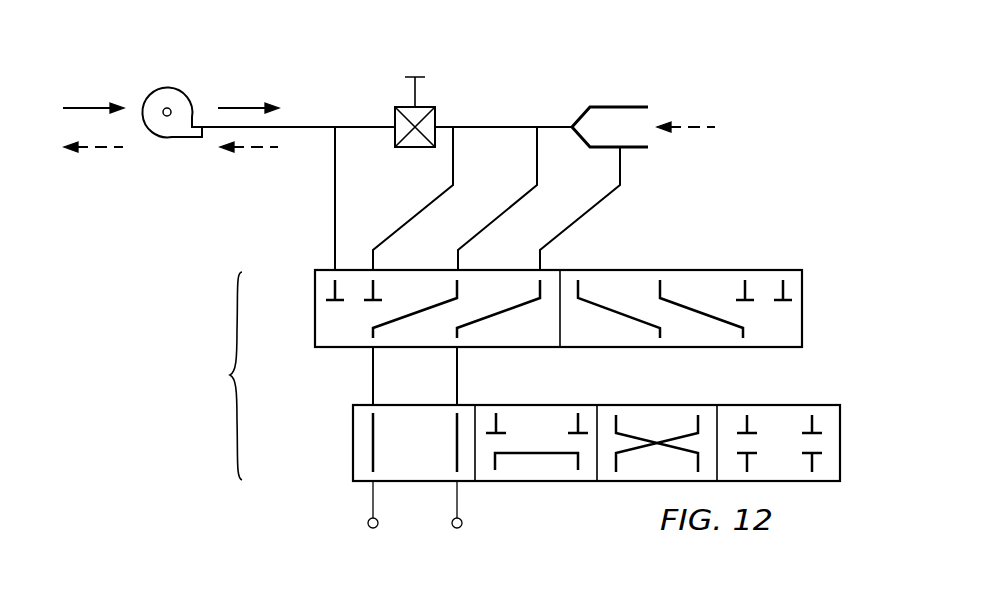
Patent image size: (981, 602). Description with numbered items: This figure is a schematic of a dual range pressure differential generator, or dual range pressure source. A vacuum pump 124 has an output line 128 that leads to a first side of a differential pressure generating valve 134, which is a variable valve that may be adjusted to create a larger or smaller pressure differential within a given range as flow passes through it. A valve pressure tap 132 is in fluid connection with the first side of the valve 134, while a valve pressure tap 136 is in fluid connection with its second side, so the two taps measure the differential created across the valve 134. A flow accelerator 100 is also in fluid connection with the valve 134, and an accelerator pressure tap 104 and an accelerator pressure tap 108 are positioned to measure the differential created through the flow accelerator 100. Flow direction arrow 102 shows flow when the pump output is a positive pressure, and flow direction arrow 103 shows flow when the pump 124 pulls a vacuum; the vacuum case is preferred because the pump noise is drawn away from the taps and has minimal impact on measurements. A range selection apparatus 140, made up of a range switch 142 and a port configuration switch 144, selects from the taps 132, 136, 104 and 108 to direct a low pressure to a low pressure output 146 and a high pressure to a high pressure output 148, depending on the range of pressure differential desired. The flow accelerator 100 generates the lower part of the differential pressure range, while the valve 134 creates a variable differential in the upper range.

The flow accelerator 100 is at (588, 88).
The flow direction arrow 102 is at (84, 103).
The flow direction arrow 103 is at (92, 150).
The accelerator pressure tap 104 is at (620, 165).
The accelerator pressure tap 108 is at (535, 165).
The vacuum pump 124 is at (165, 89).
The output line 128 is at (308, 125).
The valve pressure tap 132 is at (334, 198).
The differential pressure generating valve 134 is at (437, 113).
The valve pressure tap 136 is at (422, 209).
The range selection apparatus 140 is at (216, 376).
The range switch 142 is at (313, 320).
The port configuration switch 144 is at (353, 452).
The low pressure output 146 is at (367, 526).
The high pressure output 148 is at (462, 526).